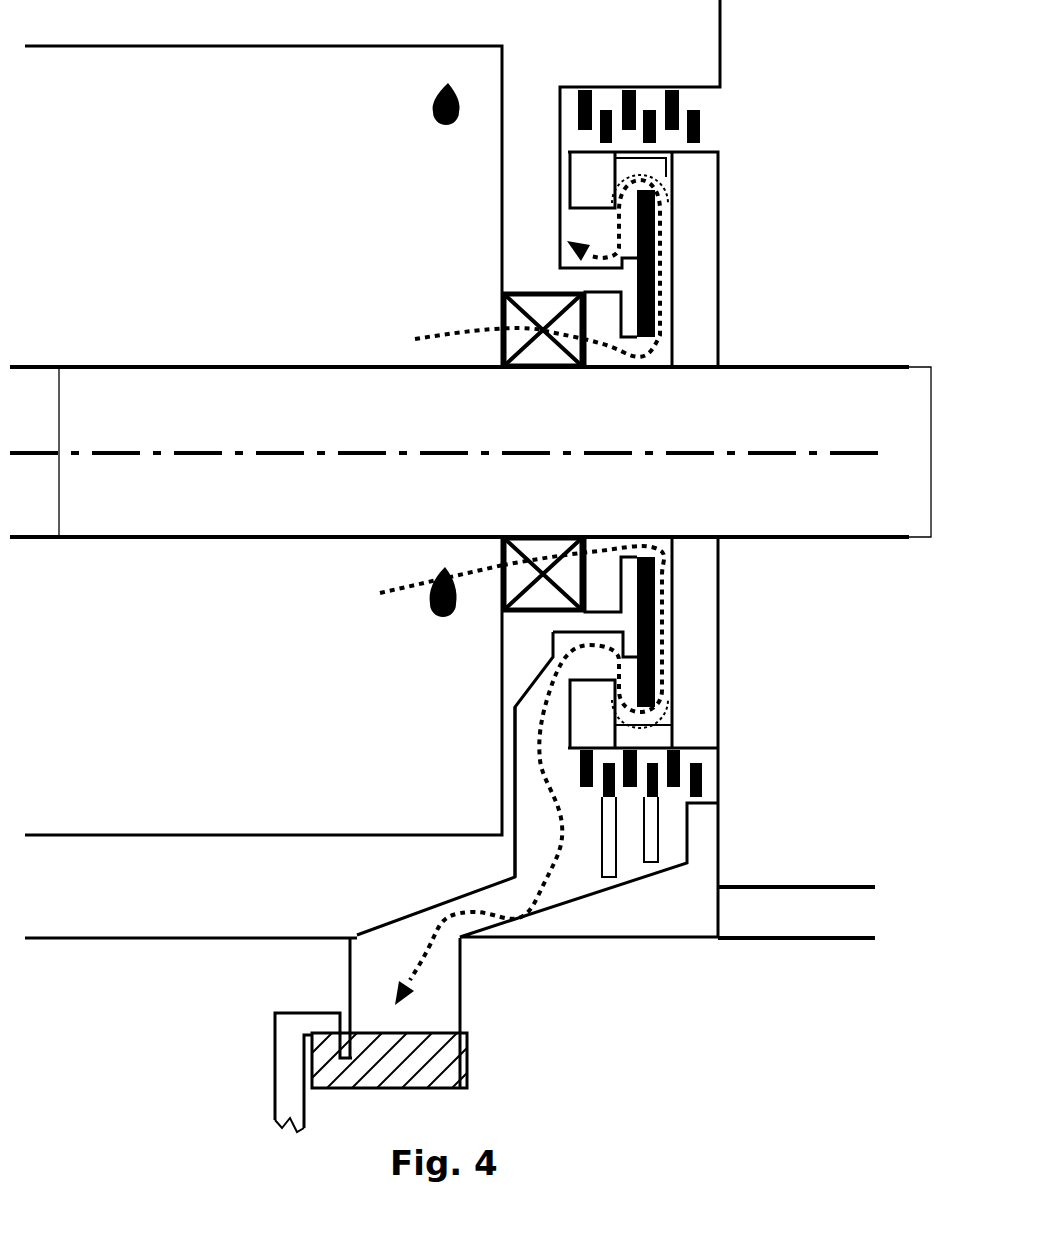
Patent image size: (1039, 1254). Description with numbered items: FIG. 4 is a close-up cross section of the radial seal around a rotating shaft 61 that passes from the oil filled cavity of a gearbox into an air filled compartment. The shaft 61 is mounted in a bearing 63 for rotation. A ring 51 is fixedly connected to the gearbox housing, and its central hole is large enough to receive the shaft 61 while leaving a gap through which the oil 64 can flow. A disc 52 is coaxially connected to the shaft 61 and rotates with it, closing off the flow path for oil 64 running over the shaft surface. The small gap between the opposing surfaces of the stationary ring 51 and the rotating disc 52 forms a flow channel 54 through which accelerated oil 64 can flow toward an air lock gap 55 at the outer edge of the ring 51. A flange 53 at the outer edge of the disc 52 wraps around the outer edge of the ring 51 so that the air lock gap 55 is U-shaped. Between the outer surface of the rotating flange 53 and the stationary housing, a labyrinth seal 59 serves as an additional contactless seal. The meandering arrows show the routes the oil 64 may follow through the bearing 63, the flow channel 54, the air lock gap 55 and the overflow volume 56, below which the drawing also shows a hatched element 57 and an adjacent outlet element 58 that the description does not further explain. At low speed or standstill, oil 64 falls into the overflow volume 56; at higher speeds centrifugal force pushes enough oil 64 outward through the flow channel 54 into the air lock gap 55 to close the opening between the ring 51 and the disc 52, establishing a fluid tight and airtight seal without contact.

The ring 51 is at (655, 272).
The disc 52 is at (718, 296).
The flange 53 is at (585, 190).
The flow channel 54 is at (660, 594).
The air lock gap 55 is at (663, 710).
The overflow volume 56 is at (535, 808).
The absorbent element 57 is at (467, 1060).
The drain outlet 58 is at (287, 1103).
The labyrinth seal 59 is at (660, 128).
The shaft 61 is at (104, 366).
The bearing 63 is at (502, 320).
The oil 64 is at (433, 130).